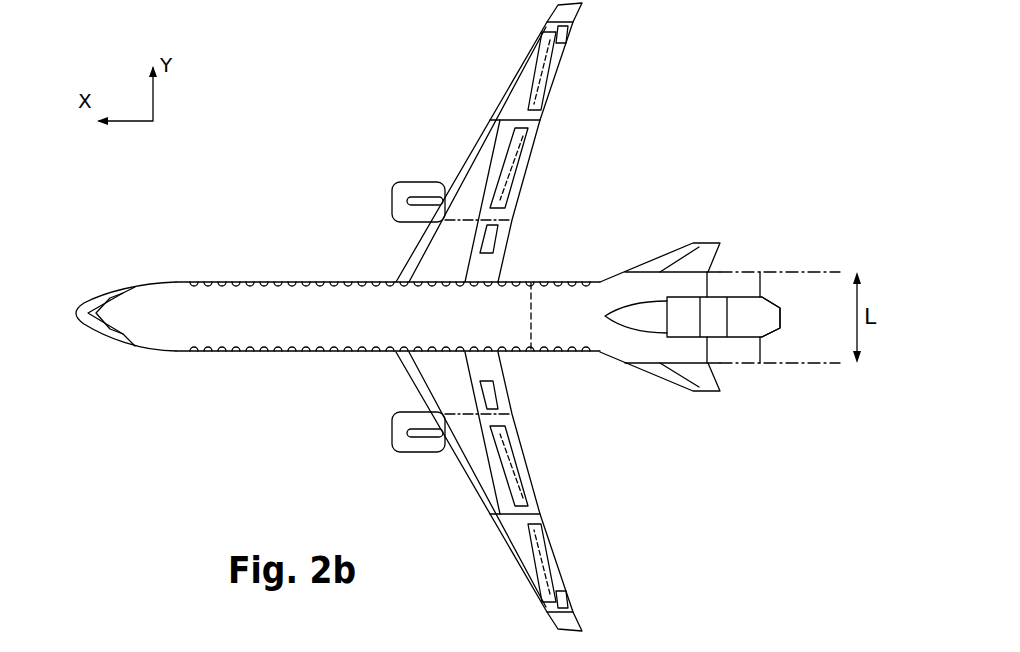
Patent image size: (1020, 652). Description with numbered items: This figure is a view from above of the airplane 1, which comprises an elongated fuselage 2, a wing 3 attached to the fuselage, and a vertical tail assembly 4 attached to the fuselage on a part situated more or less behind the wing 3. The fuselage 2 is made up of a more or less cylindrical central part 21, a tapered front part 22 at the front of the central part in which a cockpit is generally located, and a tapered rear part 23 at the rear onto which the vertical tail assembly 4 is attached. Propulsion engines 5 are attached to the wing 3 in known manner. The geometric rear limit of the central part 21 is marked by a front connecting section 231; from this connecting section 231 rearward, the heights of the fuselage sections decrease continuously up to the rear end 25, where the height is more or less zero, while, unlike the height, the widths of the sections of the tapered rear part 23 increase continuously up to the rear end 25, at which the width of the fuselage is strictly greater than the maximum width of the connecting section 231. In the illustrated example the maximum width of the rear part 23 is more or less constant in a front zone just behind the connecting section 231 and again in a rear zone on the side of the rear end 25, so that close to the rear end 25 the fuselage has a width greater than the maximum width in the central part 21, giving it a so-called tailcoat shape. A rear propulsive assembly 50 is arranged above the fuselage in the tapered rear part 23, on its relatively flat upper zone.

The airplane 1 is at (316, 198).
The fuselage 2 is at (270, 265).
The central part 21 is at (227, 333).
The tapered front part 22 is at (143, 332).
The tapered rear part 23 is at (570, 338).
The connecting section 231 is at (533, 307).
The wing 3 is at (472, 120).
The vertical tail assembly 4 is at (703, 228).
The propulsion engines 5 is at (403, 190).
The rear propulsive assembly 50 is at (780, 286).
The rear end 25 is at (763, 350).